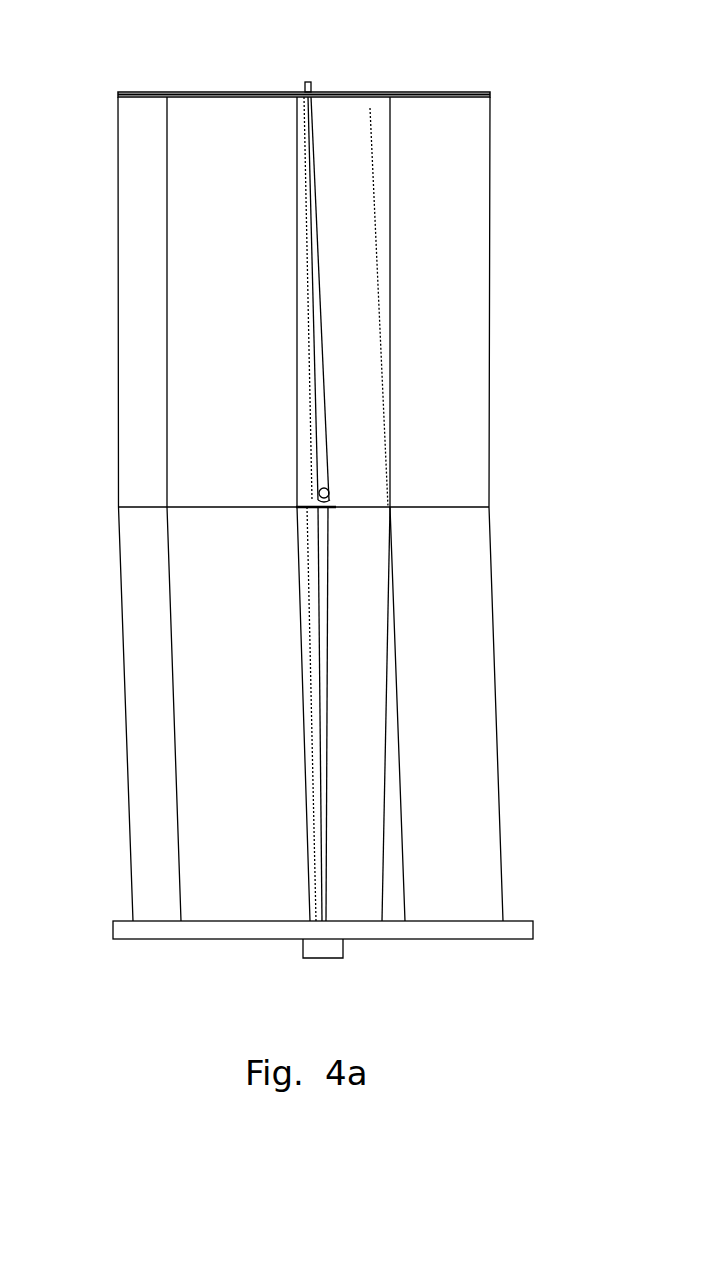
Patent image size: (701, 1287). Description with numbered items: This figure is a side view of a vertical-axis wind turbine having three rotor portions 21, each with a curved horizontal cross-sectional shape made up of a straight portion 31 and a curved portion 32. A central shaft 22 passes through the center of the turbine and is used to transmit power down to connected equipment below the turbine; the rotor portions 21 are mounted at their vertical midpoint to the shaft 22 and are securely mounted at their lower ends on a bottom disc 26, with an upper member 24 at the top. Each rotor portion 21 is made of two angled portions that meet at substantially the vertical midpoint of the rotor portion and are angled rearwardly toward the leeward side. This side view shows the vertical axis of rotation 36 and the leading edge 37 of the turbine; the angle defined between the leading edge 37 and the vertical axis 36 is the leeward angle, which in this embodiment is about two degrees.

The rotor portion 21 is at (138, 338).
The central shaft 22 is at (303, 138).
The top frame member 24 is at (452, 91).
The bottom disc 26 is at (520, 927).
The straight portion 31 is at (233, 241).
The curved portion 32 is at (158, 243).
The vertical axis of rotation 36 is at (310, 73).
The leading edge 37 is at (327, 425).